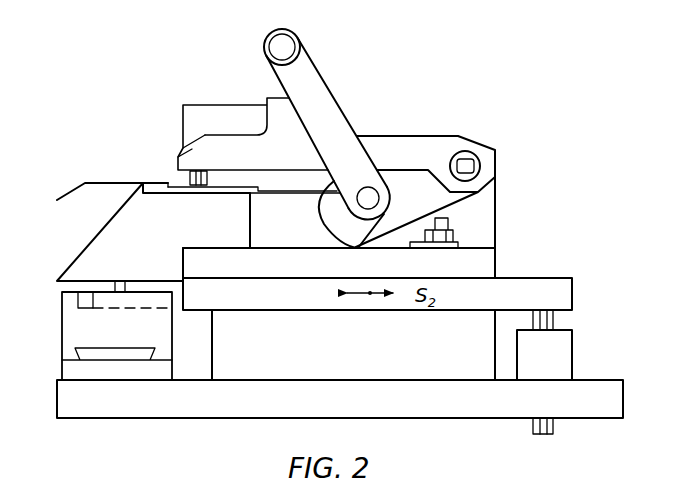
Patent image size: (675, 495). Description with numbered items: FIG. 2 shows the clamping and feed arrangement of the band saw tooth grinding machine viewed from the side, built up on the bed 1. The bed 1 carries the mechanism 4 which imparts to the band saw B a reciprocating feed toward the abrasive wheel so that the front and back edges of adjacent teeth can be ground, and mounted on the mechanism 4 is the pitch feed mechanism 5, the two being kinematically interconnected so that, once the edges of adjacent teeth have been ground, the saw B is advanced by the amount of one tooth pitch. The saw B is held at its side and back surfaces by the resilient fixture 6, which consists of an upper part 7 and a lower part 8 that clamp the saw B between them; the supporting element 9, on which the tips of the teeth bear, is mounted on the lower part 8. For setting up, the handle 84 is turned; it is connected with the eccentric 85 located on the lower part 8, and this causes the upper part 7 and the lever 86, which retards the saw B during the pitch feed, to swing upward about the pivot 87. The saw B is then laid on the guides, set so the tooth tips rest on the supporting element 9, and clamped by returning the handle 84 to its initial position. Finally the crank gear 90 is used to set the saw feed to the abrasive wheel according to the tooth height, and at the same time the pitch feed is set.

The bed 1 is at (585, 384).
The mechanism for imparting reciprocating feed 4 is at (574, 284).
The pitch feed mechanism 5 is at (68, 190).
The resilient fixture 6 is at (498, 200).
The upper part of the resilient fixture 7 is at (216, 117).
The lower part of the resilient fixture 8 is at (490, 260).
The supporting element 9 is at (143, 187).
The band saw B is at (175, 190).
The handle 84 is at (320, 87).
The eccentric 85 is at (368, 233).
The lever 86 is at (200, 152).
The pivot 87 is at (471, 170).
The crank gear 90 is at (565, 350).